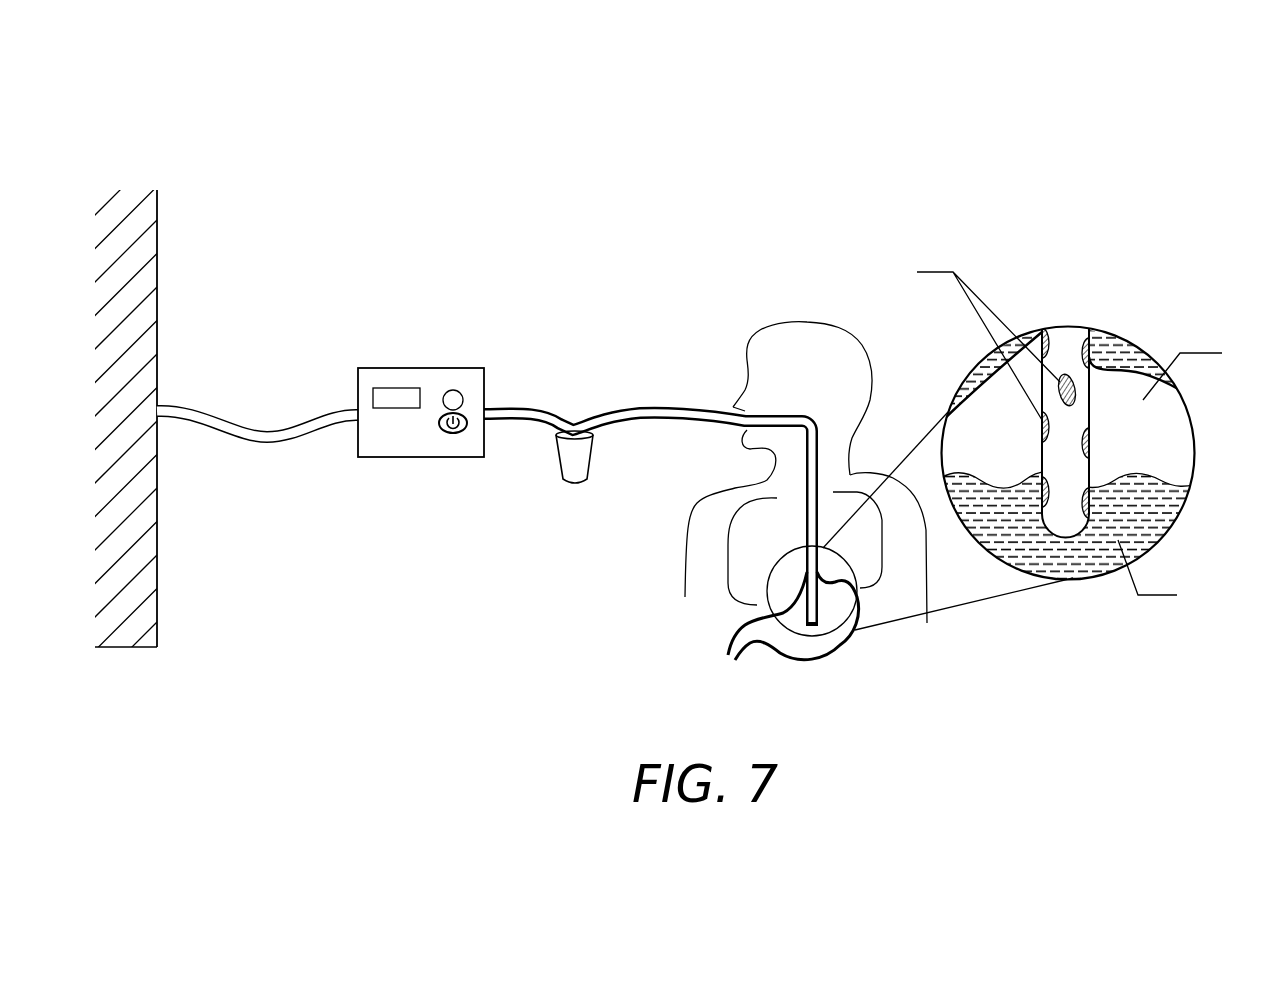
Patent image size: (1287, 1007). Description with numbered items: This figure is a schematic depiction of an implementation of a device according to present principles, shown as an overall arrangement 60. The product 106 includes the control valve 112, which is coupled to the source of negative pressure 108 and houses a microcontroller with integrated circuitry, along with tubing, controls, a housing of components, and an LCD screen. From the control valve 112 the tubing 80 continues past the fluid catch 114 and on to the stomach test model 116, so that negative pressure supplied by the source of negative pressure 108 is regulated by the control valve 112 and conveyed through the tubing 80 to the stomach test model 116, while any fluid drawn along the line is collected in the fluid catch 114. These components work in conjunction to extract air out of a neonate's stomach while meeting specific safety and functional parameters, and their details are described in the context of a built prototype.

The suction system 60 is at (1221, 137).
The suction tube with holes 80 is at (985, 393).
The product 106 is at (770, 333).
The source of negative pressure 108 is at (157, 222).
The control valve 112 is at (420, 368).
The fluid catch 114 is at (593, 455).
The stomach test model 116 is at (835, 646).